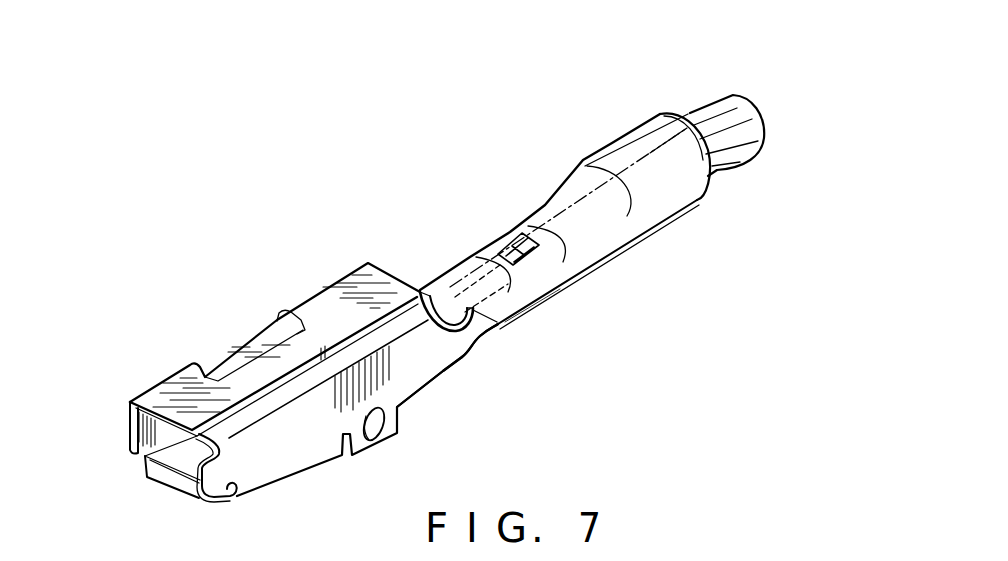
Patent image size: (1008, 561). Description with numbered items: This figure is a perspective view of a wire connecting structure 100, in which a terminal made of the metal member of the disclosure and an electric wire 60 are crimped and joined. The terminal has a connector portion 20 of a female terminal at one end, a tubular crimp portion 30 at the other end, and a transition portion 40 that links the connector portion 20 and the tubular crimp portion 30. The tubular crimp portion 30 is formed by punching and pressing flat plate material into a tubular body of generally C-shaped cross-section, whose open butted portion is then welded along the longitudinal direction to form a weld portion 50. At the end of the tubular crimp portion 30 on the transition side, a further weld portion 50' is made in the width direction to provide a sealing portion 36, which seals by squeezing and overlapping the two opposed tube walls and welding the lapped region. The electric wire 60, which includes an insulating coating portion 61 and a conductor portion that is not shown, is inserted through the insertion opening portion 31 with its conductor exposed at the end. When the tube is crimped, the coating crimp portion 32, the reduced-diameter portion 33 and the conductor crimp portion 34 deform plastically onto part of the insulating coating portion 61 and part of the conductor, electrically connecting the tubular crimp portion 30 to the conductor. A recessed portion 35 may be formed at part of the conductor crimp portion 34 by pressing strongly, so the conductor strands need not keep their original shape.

The wire connecting structure 100 is at (363, 170).
The connector portion 20 is at (306, 289).
The tubular crimp portion 30 is at (651, 20).
The insertion opening portion 31 is at (690, 113).
The coating crimp portion 32 is at (640, 137).
The reduced-diameter portion 33 is at (567, 186).
The conductor crimp portion 34 is at (513, 236).
The recessed portion 35 is at (541, 250).
The sealing portion 36 is at (514, 334).
The transition portion 40 is at (485, 365).
The weld portion 50 is at (698, 202).
The weld portion 50' is at (445, 261).
The electric wire 60 is at (755, 170).
The insulating coating portion 61 is at (733, 130).